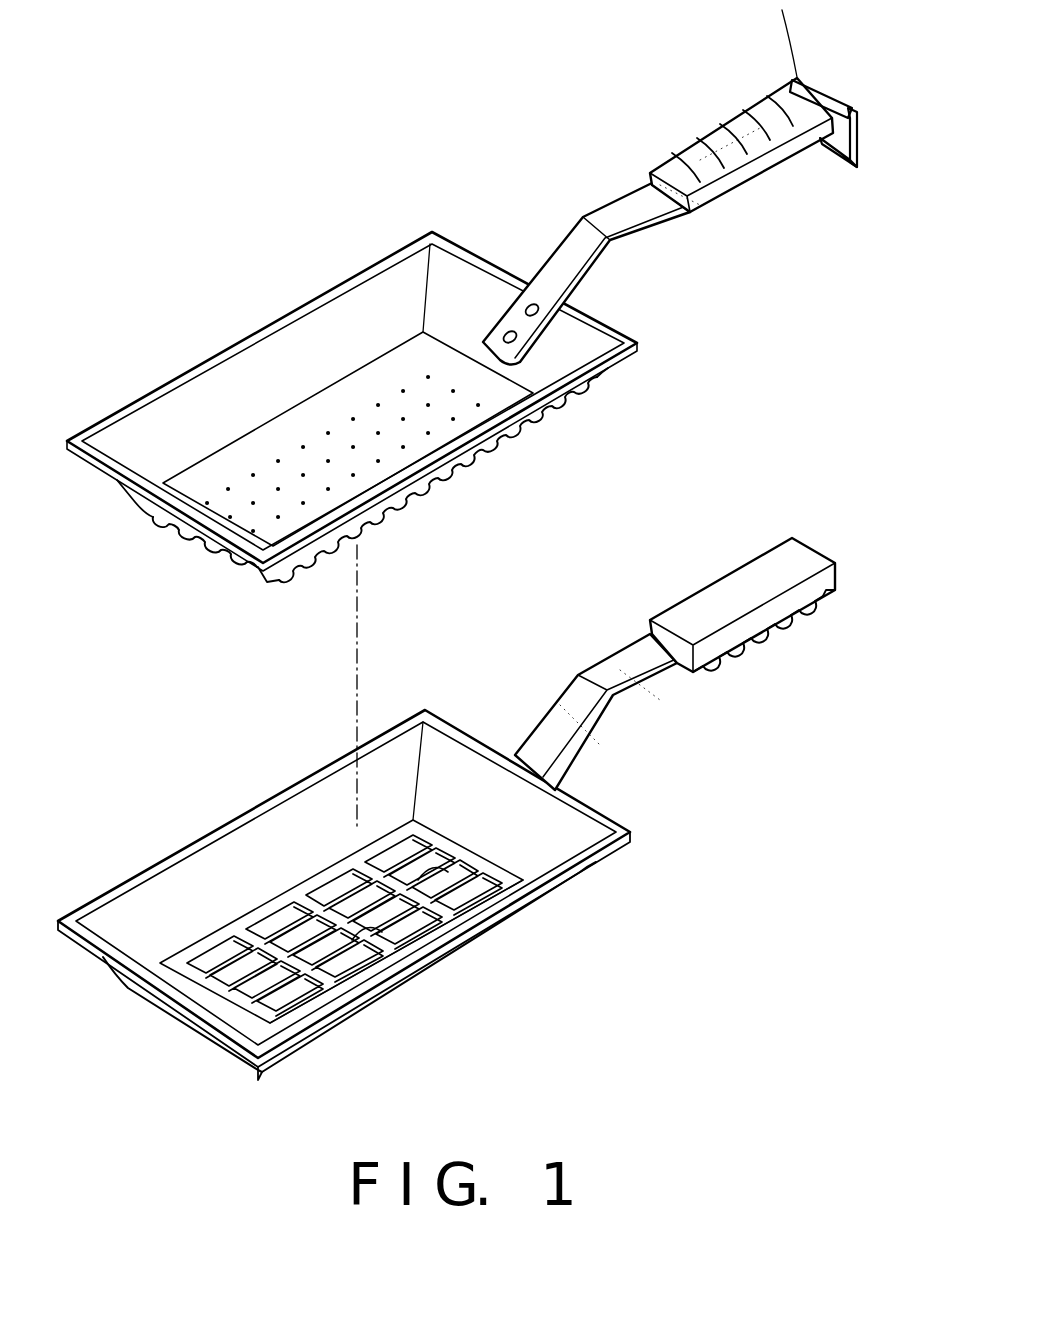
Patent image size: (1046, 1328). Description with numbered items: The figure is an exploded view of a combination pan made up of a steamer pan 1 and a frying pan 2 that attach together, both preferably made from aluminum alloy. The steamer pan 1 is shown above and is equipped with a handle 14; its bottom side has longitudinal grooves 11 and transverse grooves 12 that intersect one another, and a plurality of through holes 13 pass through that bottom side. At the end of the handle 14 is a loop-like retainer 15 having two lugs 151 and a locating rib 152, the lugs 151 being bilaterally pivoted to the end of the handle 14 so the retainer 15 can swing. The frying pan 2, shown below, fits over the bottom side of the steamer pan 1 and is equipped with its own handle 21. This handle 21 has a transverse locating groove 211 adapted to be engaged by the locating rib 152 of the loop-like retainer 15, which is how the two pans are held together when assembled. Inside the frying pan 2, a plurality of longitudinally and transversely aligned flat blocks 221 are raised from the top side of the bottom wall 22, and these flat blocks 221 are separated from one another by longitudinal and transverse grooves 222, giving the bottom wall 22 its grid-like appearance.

The steamer pan 1 is at (220, 372).
The longitudinal grooves 11 is at (197, 538).
The transverse grooves 12 is at (480, 466).
The through holes 13 is at (353, 414).
The handle 14 is at (695, 136).
The loop-like retainer 15 is at (857, 145).
The lugs 151 is at (847, 100).
The locating rib 152 is at (833, 147).
The frying pan 2 is at (258, 832).
The handle 21 is at (723, 583).
The transverse locating groove 211 is at (828, 606).
The bottom wall 22 is at (222, 948).
The flat blocks 221 is at (470, 890).
The longitudinal and transverse grooves 222 is at (378, 998).